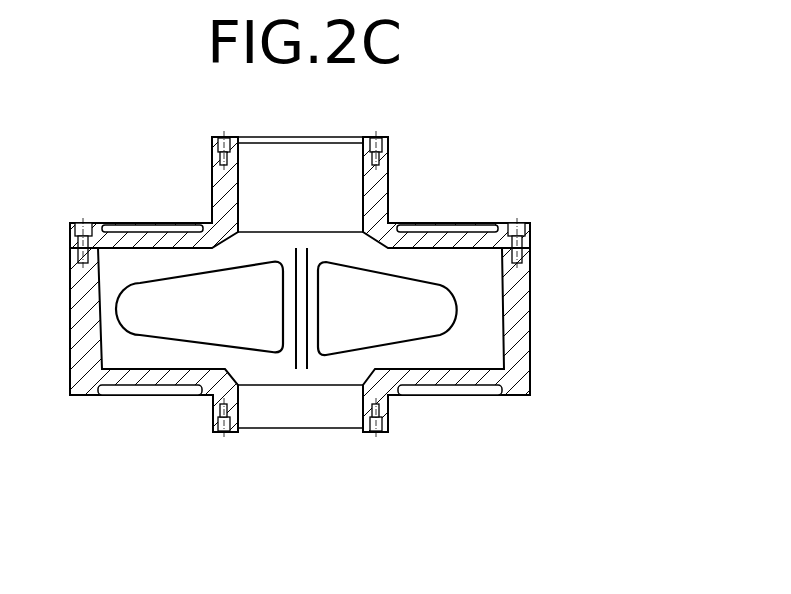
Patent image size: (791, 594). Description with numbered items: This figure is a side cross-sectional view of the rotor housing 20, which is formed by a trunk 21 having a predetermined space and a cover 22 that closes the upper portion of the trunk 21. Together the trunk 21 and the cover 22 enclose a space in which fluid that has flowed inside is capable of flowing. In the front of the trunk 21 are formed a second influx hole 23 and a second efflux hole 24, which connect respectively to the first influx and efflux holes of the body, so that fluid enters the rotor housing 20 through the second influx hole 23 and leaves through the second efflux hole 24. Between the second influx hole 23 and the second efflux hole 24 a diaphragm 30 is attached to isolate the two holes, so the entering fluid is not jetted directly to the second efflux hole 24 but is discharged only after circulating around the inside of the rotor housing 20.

The rotor housing 20 is at (361, 284).
The trunk 21 is at (532, 254).
The cover 22 is at (494, 230).
The second influx hole 23 is at (378, 323).
The second efflux hole 24 is at (250, 338).
The diaphragm 30 is at (302, 338).